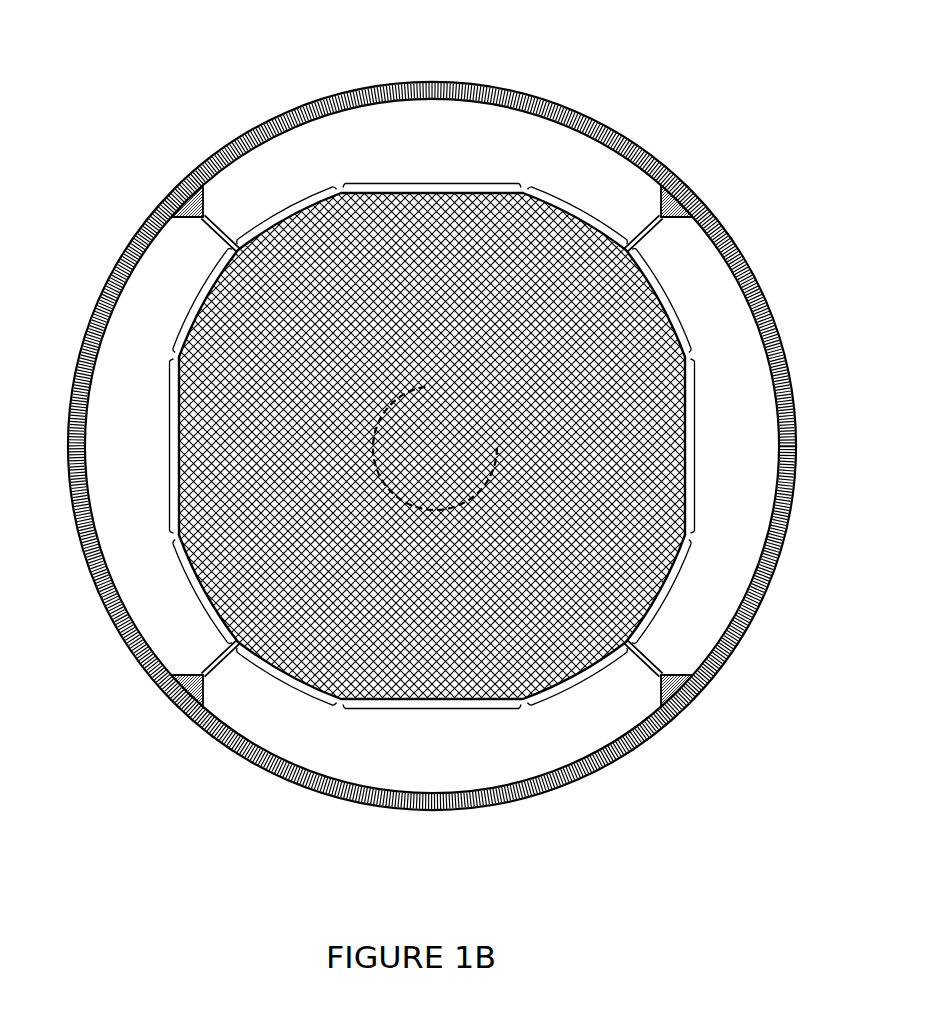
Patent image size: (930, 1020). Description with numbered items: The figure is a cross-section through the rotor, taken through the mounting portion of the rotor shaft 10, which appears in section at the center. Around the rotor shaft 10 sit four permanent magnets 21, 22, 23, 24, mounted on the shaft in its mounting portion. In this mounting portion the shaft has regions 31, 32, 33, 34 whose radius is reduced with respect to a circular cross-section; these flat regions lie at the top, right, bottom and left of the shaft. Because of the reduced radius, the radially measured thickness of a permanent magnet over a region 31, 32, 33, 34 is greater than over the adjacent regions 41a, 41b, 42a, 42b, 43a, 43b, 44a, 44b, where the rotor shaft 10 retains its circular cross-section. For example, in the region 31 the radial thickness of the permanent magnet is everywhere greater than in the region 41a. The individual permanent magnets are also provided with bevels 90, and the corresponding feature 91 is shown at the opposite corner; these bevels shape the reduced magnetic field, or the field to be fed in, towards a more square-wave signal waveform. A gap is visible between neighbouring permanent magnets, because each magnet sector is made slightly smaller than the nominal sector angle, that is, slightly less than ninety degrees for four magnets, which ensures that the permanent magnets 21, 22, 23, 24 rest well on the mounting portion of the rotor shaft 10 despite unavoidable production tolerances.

The rotor shaft 10 is at (377, 672).
The permanent magnet 21 is at (470, 122).
The permanent magnet 22 is at (748, 506).
The permanent magnet 23 is at (470, 776).
The permanent magnet 24 is at (120, 516).
The region having reduced radius 31 is at (432, 180).
The region having reduced radius 32 is at (698, 446).
The region having reduced radius 33 is at (433, 712).
The region having reduced radius 34 is at (162, 446).
The adjacent region having circular cross-section 41a is at (287, 210).
The adjacent region having circular cross-section 41b is at (575, 210).
The adjacent region having circular cross-section 42a is at (663, 298).
The adjacent region having circular cross-section 42b is at (663, 592).
The adjacent region having circular cross-section 43a is at (580, 679).
The adjacent region having circular cross-section 43b is at (285, 679).
The adjacent region having circular cross-section 44a is at (203, 589).
The adjacent region having circular cross-section 44b is at (203, 300).
The bevel 90 is at (673, 203).
The left spacer wedge 91 is at (190, 203).